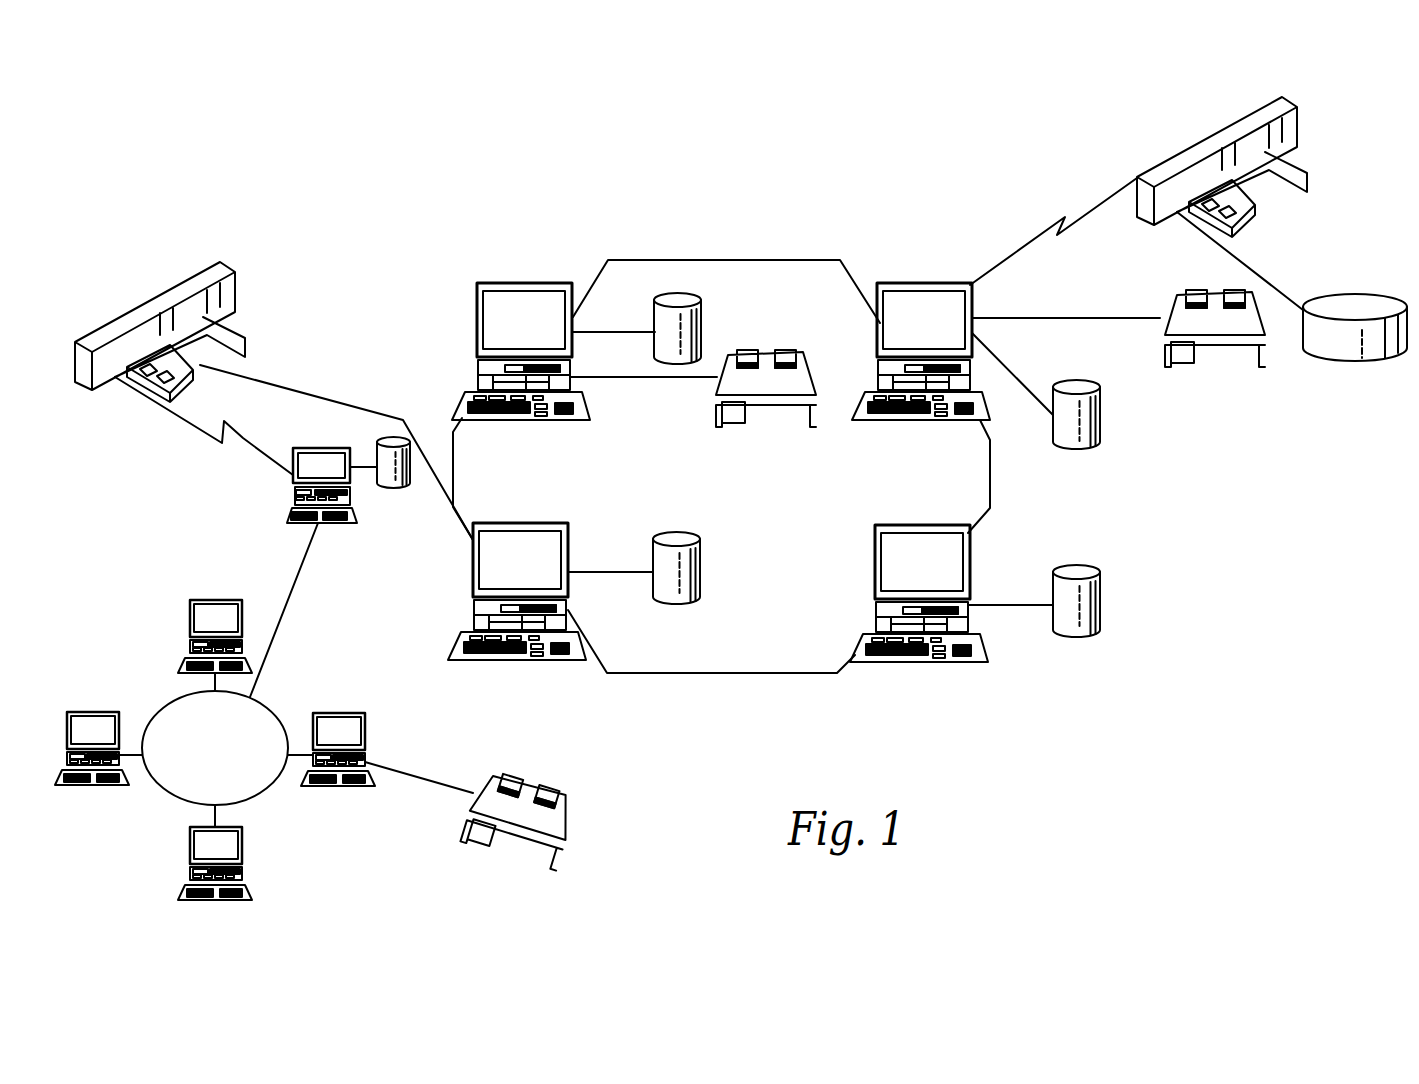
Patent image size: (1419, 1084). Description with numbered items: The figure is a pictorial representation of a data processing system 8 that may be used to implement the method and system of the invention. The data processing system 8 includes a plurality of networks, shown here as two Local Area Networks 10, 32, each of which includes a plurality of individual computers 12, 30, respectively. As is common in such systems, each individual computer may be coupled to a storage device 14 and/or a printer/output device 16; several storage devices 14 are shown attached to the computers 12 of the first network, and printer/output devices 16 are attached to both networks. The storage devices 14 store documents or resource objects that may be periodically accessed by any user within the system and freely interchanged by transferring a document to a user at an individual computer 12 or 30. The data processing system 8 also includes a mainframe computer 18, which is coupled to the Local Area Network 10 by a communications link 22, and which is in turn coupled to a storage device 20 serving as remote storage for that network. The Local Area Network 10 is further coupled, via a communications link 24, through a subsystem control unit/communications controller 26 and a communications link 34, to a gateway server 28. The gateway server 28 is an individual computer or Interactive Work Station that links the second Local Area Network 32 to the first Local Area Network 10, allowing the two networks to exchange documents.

The data processing system 8 is at (753, 220).
The Local Area Network 10 is at (747, 673).
The individual computer 12 is at (545, 283).
The storage device 14 is at (703, 310).
The printer/output device 16 is at (765, 350).
The mainframe computer 18 is at (1215, 135).
The storage device 20 is at (1375, 298).
The communications link 22 is at (1095, 208).
The communications link 24 is at (327, 395).
The subsystem control unit/communications controller 26 is at (227, 270).
The gateway server 28 is at (320, 448).
The individual computer 30 is at (227, 600).
The Local Area Network 32 is at (168, 793).
The communications link 34 is at (240, 447).